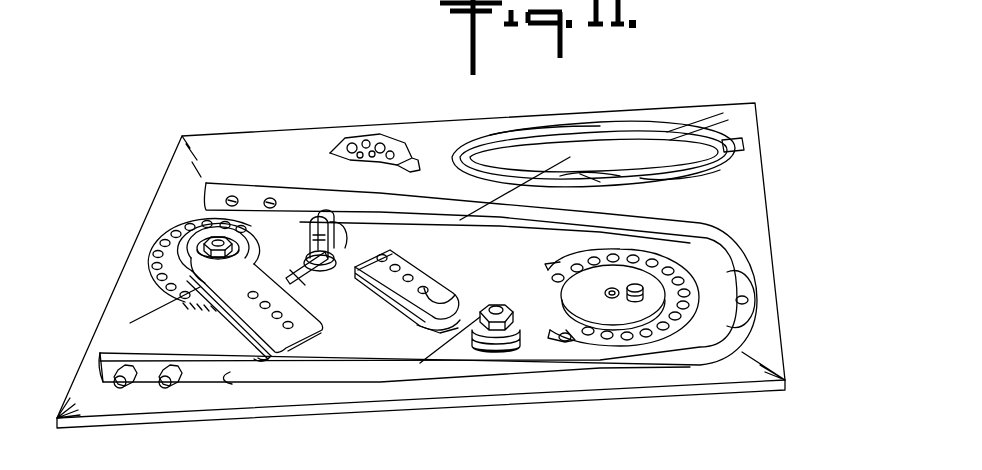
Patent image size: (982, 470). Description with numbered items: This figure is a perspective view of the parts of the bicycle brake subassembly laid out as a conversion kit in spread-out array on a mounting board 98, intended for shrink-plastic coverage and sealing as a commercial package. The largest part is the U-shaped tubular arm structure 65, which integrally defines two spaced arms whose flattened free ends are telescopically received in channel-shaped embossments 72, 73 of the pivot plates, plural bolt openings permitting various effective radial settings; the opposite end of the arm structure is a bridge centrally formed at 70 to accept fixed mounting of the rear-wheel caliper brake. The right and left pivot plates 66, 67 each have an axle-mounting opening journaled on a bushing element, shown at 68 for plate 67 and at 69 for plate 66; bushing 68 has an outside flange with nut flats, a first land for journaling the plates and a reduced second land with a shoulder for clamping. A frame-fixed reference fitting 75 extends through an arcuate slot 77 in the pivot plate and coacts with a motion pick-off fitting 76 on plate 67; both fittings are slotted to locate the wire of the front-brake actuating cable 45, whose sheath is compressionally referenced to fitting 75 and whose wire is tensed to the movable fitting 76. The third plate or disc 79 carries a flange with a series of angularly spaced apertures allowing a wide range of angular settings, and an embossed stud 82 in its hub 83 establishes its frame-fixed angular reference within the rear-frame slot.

The front-brake actuating cable 45 is at (622, 122).
The U-shaped tubular arm structure 65 is at (556, 388).
The left pivot plate 66 is at (246, 347).
The right pivot plate 67 is at (415, 336).
The bushing element 68 is at (206, 246).
The bushing element 69 is at (494, 303).
The bridge 70 is at (752, 292).
The channel-shaped embossment 72 is at (422, 280).
The channel-shaped embossment 73 is at (237, 297).
The frame-fixed reference fitting 75 is at (294, 248).
The motion pick-off fitting 76 is at (333, 222).
The arcuate slot 77 is at (310, 278).
The third plate or disc 79 is at (568, 256).
The embossed stud 82 is at (634, 285).
The hub 83 is at (606, 297).
The mounting board 98 is at (775, 338).